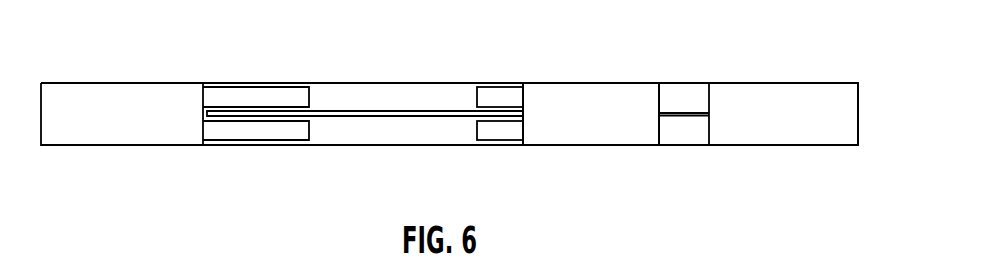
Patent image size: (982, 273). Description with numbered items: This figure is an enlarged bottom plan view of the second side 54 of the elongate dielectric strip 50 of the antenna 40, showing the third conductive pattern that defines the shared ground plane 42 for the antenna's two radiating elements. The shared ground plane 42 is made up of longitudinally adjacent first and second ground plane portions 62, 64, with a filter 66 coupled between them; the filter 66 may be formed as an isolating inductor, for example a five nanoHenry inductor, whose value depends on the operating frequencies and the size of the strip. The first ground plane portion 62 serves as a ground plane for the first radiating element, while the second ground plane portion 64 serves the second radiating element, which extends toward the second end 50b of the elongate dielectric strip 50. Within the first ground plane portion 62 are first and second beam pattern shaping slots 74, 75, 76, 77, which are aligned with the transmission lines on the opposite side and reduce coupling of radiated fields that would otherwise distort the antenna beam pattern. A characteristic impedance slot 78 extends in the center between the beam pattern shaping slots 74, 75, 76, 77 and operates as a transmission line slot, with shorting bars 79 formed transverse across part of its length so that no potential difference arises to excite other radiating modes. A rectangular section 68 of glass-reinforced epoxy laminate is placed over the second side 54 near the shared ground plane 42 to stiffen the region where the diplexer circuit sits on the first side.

The antenna 40 is at (502, 36).
The shared ground plane 42 is at (605, 92).
The elongate dielectric strip 50 is at (468, 150).
The second end of the elongate dielectric strip 50b is at (858, 102).
The second side of the elongate dielectric strip 54 is at (353, 92).
The first ground plane portion 62 is at (224, 108).
The second ground plane portion 64 is at (693, 93).
The filter 66 is at (576, 146).
The rectangular section of glass-reinforced epoxy laminate 68 is at (651, 128).
The first beam pattern shaping slot 74 is at (263, 96).
The first beam pattern shaping slot 75 is at (500, 88).
The second beam pattern shaping slot 76 is at (276, 140).
The second beam pattern shaping slot 77 is at (507, 141).
The characteristic impedance slot 78 is at (408, 108).
The shorting bars 79 is at (371, 116).